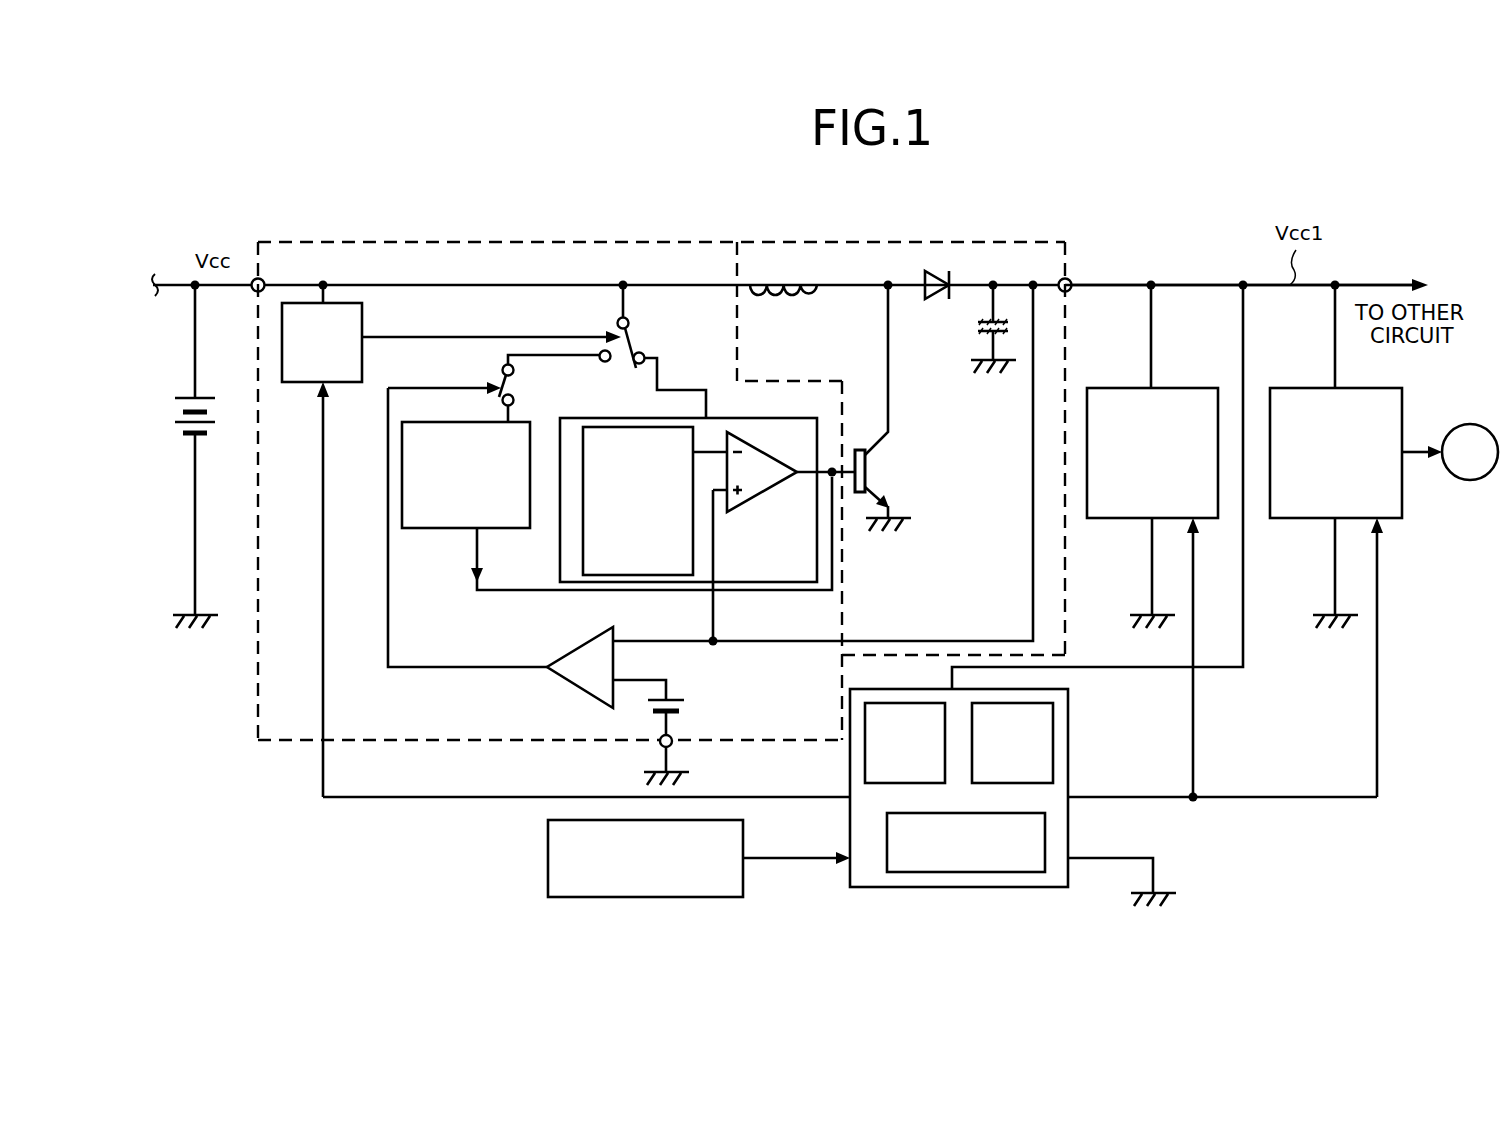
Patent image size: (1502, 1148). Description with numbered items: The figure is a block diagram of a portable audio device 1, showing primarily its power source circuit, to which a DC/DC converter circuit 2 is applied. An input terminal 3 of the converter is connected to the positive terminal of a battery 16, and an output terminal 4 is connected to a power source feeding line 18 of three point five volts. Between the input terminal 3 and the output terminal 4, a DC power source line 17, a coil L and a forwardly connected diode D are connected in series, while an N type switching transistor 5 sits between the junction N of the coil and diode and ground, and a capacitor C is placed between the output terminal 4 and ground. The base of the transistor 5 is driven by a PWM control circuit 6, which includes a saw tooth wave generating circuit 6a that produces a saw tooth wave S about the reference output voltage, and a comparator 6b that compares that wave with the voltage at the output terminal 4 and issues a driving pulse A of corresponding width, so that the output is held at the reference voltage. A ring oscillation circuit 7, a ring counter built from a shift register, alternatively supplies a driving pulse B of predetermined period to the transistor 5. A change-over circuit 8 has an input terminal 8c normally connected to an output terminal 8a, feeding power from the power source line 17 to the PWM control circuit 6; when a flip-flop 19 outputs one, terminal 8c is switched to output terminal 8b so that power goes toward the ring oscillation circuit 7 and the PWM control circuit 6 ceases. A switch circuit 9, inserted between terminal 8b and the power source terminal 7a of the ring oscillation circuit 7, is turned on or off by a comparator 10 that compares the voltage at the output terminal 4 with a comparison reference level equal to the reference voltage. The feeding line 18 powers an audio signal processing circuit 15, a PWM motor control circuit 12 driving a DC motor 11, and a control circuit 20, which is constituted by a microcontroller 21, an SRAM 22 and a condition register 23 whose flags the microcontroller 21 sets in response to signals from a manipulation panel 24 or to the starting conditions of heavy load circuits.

The portable audio device 1 is at (1037, 218).
The DC/DC converter circuit 2 is at (757, 246).
The input terminal 3 is at (262, 279).
The output terminal 4 is at (1070, 280).
The switching transistor 5 is at (868, 468).
The PWM control circuit 6 is at (770, 418).
The saw tooth wave generating circuit 6a is at (622, 427).
The comparator 6b is at (757, 496).
The ring oscillation circuit 7 is at (388, 479).
The power source terminal 7a is at (500, 397).
The change-over circuit 8 is at (633, 346).
The output side terminal 8a is at (646, 355).
The output terminal 8b is at (602, 361).
The input side terminal 8c is at (617, 322).
The switch circuit 9 is at (503, 367).
The comparator 10 is at (585, 647).
The DC motor 11 is at (1466, 481).
The PWM motor control circuit 12 is at (1295, 520).
The audio signal processing circuit 15 is at (1203, 388).
The battery 16 is at (175, 416).
The DC power source line 17 is at (418, 285).
The power source feeding line 18 is at (1190, 285).
The flip-flop 19 is at (290, 383).
The control circuit 20 is at (1068, 738).
The microcontroller 21 is at (865, 716).
The SRAM 22 is at (1053, 706).
The condition register 23 is at (1045, 831).
The manipulation panel 24 is at (548, 845).